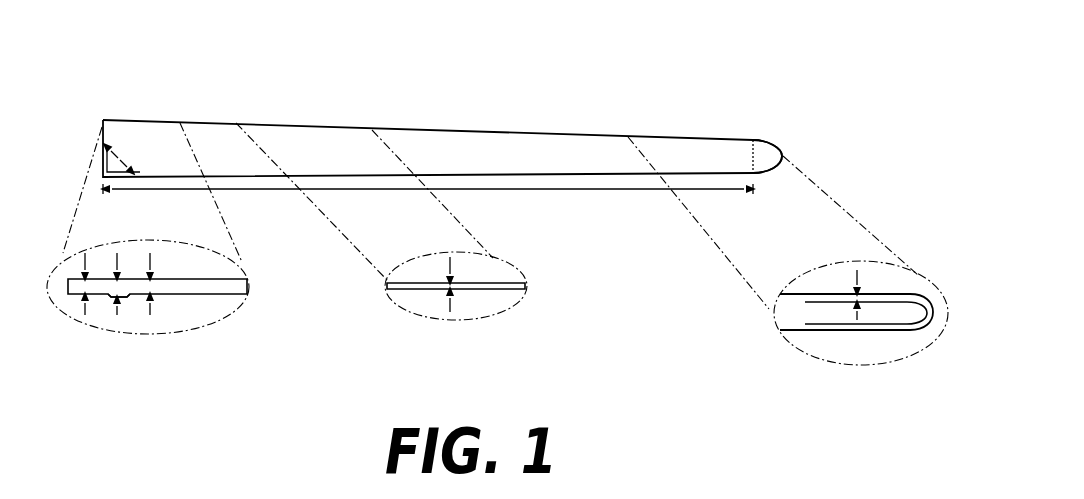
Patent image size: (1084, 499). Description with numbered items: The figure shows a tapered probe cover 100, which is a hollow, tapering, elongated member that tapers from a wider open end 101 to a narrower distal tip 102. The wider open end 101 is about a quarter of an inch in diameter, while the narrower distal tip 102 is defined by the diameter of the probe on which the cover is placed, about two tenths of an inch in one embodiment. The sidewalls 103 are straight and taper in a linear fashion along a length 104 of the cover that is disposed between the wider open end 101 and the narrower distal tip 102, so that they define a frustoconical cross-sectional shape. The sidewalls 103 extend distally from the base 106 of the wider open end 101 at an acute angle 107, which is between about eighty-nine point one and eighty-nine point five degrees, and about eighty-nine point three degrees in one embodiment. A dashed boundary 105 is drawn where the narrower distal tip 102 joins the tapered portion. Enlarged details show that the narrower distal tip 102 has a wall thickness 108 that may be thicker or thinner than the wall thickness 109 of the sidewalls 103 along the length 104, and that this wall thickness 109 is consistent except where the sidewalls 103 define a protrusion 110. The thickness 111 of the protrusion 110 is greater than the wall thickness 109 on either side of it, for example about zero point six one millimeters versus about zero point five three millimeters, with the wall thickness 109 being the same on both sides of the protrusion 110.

The tapered probe cover 100 is at (668, 36).
The wider open end 101 is at (81, 142).
The narrower distal tip 102 is at (763, 142).
The sidewalls 103 is at (463, 131).
The length 104 is at (565, 190).
The tip boundary line 105 is at (752, 157).
The base 106 is at (104, 129).
The acute angle 107 is at (117, 174).
The wall thickness of the narrower distal tip 108 is at (855, 283).
The wall thickness 109 is at (85, 305).
The protrusion 110 is at (108, 298).
The thickness of the protrusion 111 is at (118, 322).